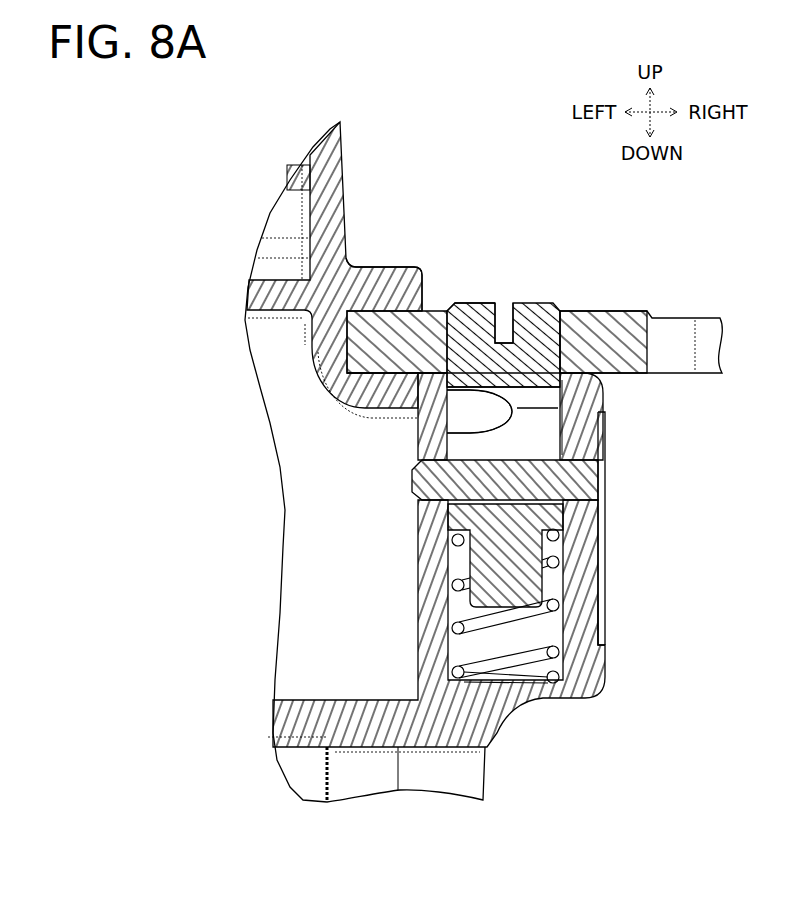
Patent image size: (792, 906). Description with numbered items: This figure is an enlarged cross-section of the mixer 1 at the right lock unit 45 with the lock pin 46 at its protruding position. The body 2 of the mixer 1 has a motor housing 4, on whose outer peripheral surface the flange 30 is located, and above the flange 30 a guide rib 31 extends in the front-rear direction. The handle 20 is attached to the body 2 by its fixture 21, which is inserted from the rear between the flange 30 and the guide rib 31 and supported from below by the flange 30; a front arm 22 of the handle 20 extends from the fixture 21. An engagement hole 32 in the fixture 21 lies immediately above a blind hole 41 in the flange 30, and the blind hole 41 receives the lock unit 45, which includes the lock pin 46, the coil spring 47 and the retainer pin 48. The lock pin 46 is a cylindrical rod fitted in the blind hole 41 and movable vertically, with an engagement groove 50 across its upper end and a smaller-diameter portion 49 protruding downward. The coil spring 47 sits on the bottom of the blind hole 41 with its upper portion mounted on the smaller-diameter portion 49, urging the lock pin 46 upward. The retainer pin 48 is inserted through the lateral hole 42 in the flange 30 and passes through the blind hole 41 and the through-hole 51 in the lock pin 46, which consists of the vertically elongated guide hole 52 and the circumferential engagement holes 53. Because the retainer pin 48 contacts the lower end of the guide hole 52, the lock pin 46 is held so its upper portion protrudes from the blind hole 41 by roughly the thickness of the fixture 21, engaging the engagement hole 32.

The mixer 1 is at (459, 140).
The body 2 is at (348, 157).
The motor housing 4 is at (340, 121).
The handle 20 is at (702, 308).
The fixture 21 is at (630, 318).
The front arm 22 is at (707, 345).
The flange 30 is at (607, 596).
The guide rib 31 is at (407, 262).
The engagement hole 32 is at (583, 316).
The blind hole 41 is at (604, 640).
The lateral hole 42 is at (588, 516).
The lock unit 45 is at (538, 300).
The lock pin 46 is at (476, 312).
The coil spring 47 is at (452, 628).
The retainer pin 48 is at (600, 482).
The smaller-diameter portion 49 is at (510, 570).
The engagement groove 50 is at (507, 306).
The through-hole 51 is at (565, 434).
The guide hole 52 is at (547, 418).
The engagement hole 53 is at (497, 414).